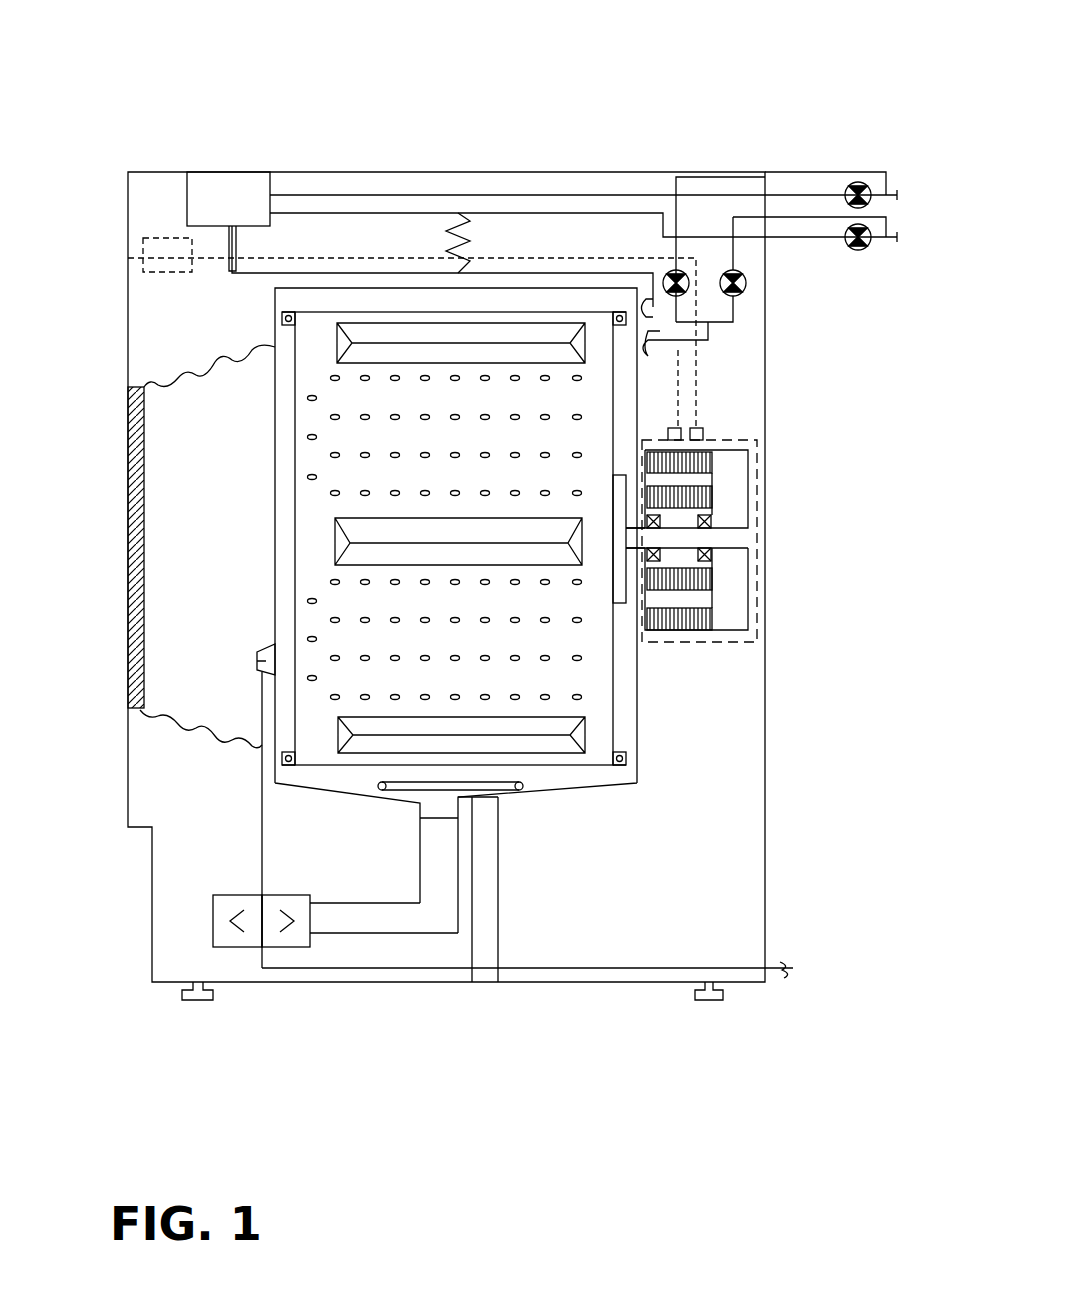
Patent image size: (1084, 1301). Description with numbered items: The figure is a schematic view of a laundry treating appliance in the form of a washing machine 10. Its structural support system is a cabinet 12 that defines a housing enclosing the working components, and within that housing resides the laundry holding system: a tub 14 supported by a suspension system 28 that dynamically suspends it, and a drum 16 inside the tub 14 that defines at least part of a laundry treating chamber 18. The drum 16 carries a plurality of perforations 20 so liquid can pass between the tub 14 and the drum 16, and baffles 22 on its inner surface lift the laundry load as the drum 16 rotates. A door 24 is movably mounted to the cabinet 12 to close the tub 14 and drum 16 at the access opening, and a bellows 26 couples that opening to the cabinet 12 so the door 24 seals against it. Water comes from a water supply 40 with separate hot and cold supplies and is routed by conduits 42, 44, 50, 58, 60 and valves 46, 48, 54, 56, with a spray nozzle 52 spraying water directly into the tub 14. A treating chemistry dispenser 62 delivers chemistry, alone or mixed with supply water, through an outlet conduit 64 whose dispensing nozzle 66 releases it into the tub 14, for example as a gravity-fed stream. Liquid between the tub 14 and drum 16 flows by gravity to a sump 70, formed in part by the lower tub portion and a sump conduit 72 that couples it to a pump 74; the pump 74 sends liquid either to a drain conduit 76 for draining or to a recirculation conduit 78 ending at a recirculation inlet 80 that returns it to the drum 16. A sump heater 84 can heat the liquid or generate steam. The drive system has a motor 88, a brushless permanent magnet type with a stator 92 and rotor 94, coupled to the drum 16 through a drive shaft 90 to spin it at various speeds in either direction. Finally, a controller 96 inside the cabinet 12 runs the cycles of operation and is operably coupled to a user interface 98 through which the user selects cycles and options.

The washing machine 10 is at (678, 10).
The cabinet 12 is at (678, 172).
The tub 14 is at (498, 287).
The drum 16 is at (375, 311).
The laundry treating chamber 18 is at (466, 447).
The perforations 20 is at (580, 417).
The baffles 22 is at (556, 742).
The door 24 is at (138, 524).
The bellows 26 is at (172, 713).
The suspension system 28 is at (445, 212).
The water supply 40 is at (888, 164).
The conduit 42 is at (820, 171).
The conduit 44 is at (800, 220).
The valve 46 is at (668, 273).
The valve 48 is at (736, 272).
The conduit 50 is at (745, 320).
The spray nozzle 52 is at (712, 340).
The valve 54 is at (858, 182).
The valve 56 is at (862, 251).
The conduit 58 is at (310, 190).
The conduit 60 is at (335, 215).
The treating chemistry dispenser 62 is at (208, 203).
The outlet conduit 64 is at (232, 266).
The dispensing nozzle 66 is at (645, 297).
The sump 70 is at (505, 803).
The sump conduit 72 is at (433, 913).
The pump 74 is at (242, 949).
The drain conduit 76 is at (778, 972).
The recirculation conduit 78 is at (260, 828).
The recirculation inlet 80 is at (252, 653).
The sump heater 84 is at (525, 789).
The motor 88 is at (758, 439).
The drive shaft 90 is at (724, 543).
The stator 92 is at (703, 453).
The rotor 94 is at (709, 493).
The controller 96 is at (174, 275).
The user interface 98 is at (128, 254).